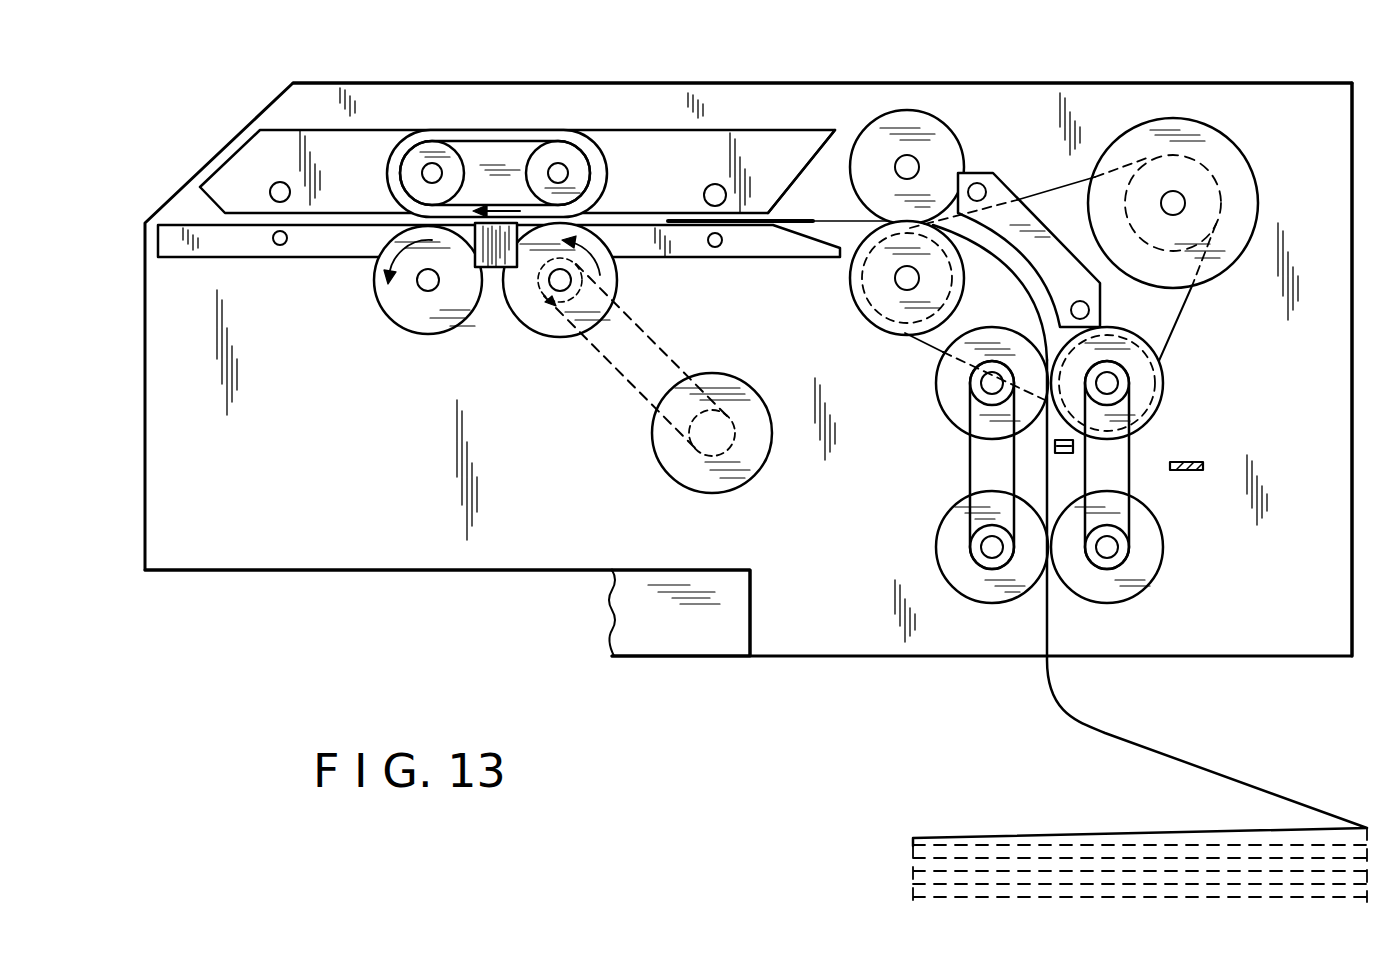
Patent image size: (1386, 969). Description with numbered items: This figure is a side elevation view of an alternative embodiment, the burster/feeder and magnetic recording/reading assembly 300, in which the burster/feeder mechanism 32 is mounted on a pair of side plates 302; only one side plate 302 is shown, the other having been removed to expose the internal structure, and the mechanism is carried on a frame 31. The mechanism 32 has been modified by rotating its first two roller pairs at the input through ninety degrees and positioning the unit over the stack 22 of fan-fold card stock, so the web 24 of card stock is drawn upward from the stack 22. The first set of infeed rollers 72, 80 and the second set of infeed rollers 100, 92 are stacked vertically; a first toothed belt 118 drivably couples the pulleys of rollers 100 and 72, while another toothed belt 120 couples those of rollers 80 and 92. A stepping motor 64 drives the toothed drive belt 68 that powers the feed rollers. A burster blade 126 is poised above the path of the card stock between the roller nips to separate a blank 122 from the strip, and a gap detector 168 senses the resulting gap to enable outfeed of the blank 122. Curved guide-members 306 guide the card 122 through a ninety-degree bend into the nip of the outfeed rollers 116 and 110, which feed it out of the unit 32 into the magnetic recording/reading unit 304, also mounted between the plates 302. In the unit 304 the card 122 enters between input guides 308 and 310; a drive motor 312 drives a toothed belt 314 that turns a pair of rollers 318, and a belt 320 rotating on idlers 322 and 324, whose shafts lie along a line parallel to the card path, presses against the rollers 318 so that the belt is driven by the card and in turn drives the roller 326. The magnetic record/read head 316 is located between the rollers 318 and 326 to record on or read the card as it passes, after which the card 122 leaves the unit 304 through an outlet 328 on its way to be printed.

The stack of fan-fold card stock 22 is at (910, 863).
The web 24 is at (1050, 608).
The frame 31 is at (638, 607).
The burster/feeder mechanism 32 is at (1220, 581).
The stepping motor 64 is at (1250, 205).
The toothed drive belt 68 is at (1050, 188).
The infeed roller 72 is at (1162, 547).
The infeed roller 80 is at (937, 534).
The infeed roller 92 is at (945, 398).
The infeed roller 100 is at (1162, 393).
The outfeed roller 110 is at (875, 318).
The outfeed roller 116 is at (927, 122).
The first toothed belt 118 is at (1135, 478).
The toothed belt 120 is at (970, 470).
The blank 122 is at (810, 226).
The burster blade 126 is at (1195, 460).
The gap detector 168 is at (1087, 450).
The burster/feeder and magnetic recording/reading assembly 300 is at (458, 582).
The side plate 302 is at (262, 493).
The magnetic recording/reading unit 304 is at (748, 38).
The curved guide-member 306 is at (1100, 293).
The input guide 308 is at (752, 137).
The input guide 310 is at (740, 245).
The drive motor 312 is at (760, 453).
The toothed belt 314 is at (655, 343).
The magnetic record/read head 316 is at (497, 268).
The rollers 318 is at (614, 268).
The belt 320 is at (603, 185).
The idler 322 is at (570, 162).
The idler 324 is at (438, 157).
The roller 326 is at (382, 296).
The outlet 328 is at (193, 205).